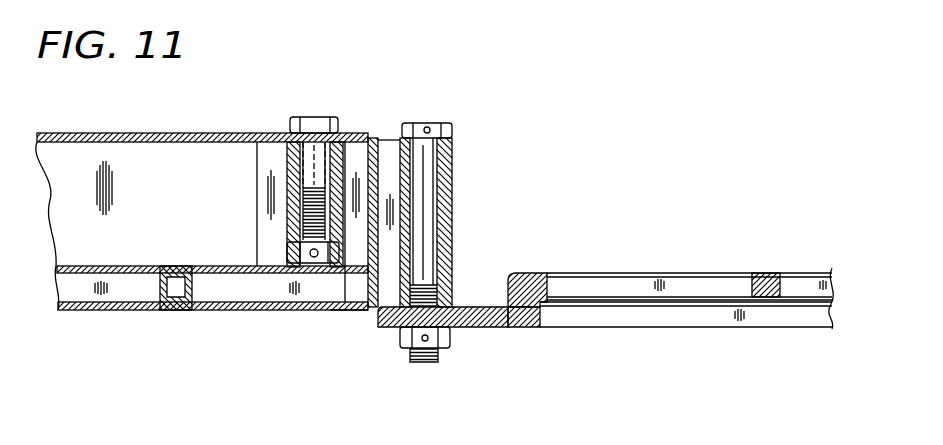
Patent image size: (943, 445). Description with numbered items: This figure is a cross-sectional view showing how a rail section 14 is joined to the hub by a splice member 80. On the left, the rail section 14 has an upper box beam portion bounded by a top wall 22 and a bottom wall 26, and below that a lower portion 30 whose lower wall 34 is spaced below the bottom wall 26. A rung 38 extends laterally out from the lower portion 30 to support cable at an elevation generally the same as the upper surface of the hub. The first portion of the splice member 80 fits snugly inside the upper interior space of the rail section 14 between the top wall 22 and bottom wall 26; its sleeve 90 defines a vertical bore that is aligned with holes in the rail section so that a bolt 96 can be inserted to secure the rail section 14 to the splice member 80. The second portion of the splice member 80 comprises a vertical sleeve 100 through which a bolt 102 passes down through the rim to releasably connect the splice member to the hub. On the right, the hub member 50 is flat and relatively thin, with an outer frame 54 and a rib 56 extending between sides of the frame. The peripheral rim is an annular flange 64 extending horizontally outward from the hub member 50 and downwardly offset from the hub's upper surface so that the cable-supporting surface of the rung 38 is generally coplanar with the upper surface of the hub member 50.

The rail section 14 is at (103, 134).
The top wall 22 is at (212, 145).
The bottom wall 26 is at (240, 311).
The lower portion 30 is at (272, 311).
The lower wall 34 is at (343, 311).
The rung 38 is at (196, 282).
The hub member 50 is at (636, 268).
The outer frame 54 is at (524, 276).
The rib 56 is at (763, 275).
The annular flange 64 is at (475, 316).
The splice member 80 is at (392, 140).
The sleeve 90 is at (286, 213).
The bolt 96 is at (315, 117).
The vertical sleeve 100 is at (452, 189).
The bolt 102 is at (432, 124).